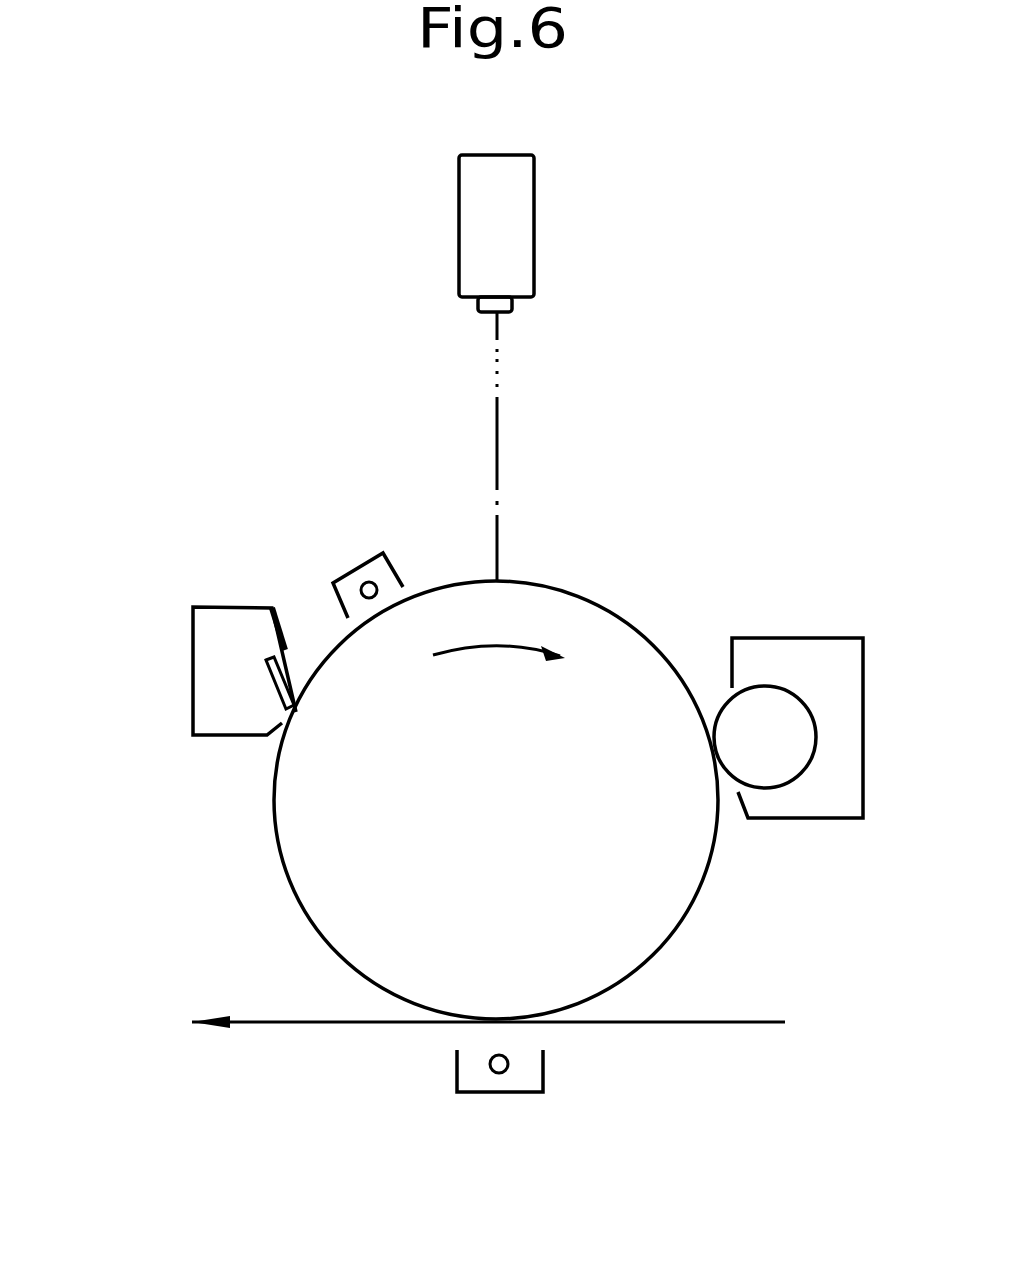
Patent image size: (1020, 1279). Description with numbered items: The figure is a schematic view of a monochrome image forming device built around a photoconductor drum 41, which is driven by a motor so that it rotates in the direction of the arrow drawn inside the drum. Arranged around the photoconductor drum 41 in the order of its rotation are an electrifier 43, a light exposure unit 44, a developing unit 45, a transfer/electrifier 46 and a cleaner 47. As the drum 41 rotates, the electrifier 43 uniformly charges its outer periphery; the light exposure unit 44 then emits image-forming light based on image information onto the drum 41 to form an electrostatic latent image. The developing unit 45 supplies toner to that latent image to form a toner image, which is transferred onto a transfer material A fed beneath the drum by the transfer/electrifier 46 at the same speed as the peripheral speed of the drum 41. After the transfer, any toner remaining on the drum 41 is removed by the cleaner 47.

The photoconductor drum 41 is at (303, 816).
The electrifier 43 is at (353, 562).
The light exposure unit 44 is at (452, 246).
The developing unit 45 is at (808, 637).
The transfer/electrifier 46 is at (507, 1095).
The cleaner 47 is at (193, 670).
The transfer material A is at (310, 1025).